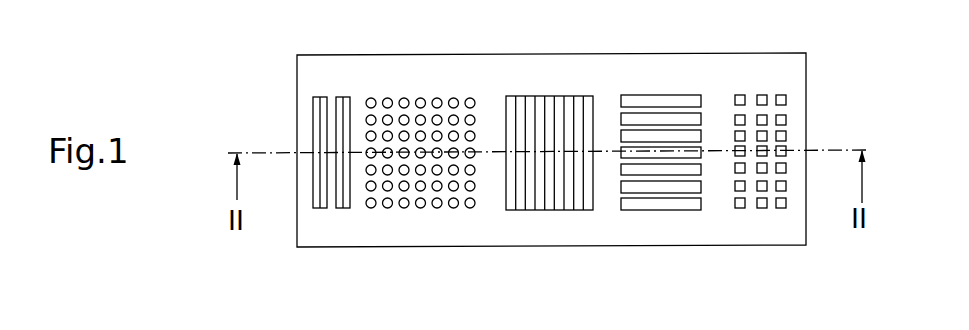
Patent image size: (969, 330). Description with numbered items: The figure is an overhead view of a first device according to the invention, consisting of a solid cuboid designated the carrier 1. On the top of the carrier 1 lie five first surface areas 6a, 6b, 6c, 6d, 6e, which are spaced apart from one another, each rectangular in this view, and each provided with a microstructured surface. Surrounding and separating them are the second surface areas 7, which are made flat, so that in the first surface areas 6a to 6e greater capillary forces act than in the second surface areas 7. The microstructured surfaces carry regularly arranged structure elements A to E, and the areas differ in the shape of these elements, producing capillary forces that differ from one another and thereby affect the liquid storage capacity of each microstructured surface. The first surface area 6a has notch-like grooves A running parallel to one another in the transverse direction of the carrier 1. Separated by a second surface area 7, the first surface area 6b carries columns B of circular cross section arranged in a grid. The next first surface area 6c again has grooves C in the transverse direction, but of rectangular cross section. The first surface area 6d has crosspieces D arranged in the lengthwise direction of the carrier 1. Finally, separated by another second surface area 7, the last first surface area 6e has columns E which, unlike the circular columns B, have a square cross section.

The carrier 1 is at (581, 159).
The second surface areas 7 is at (607, 226).
The first surface area 6a is at (343, 103).
The first surface area 6b is at (405, 103).
The first surface area 6c is at (552, 107).
The first surface area 6d is at (648, 102).
The first surface area 6e is at (760, 100).
The notch-like grooves A is at (330, 158).
The columns B is at (411, 158).
The grooves C is at (545, 158).
The crosspieces D is at (661, 158).
The columns E is at (762, 158).